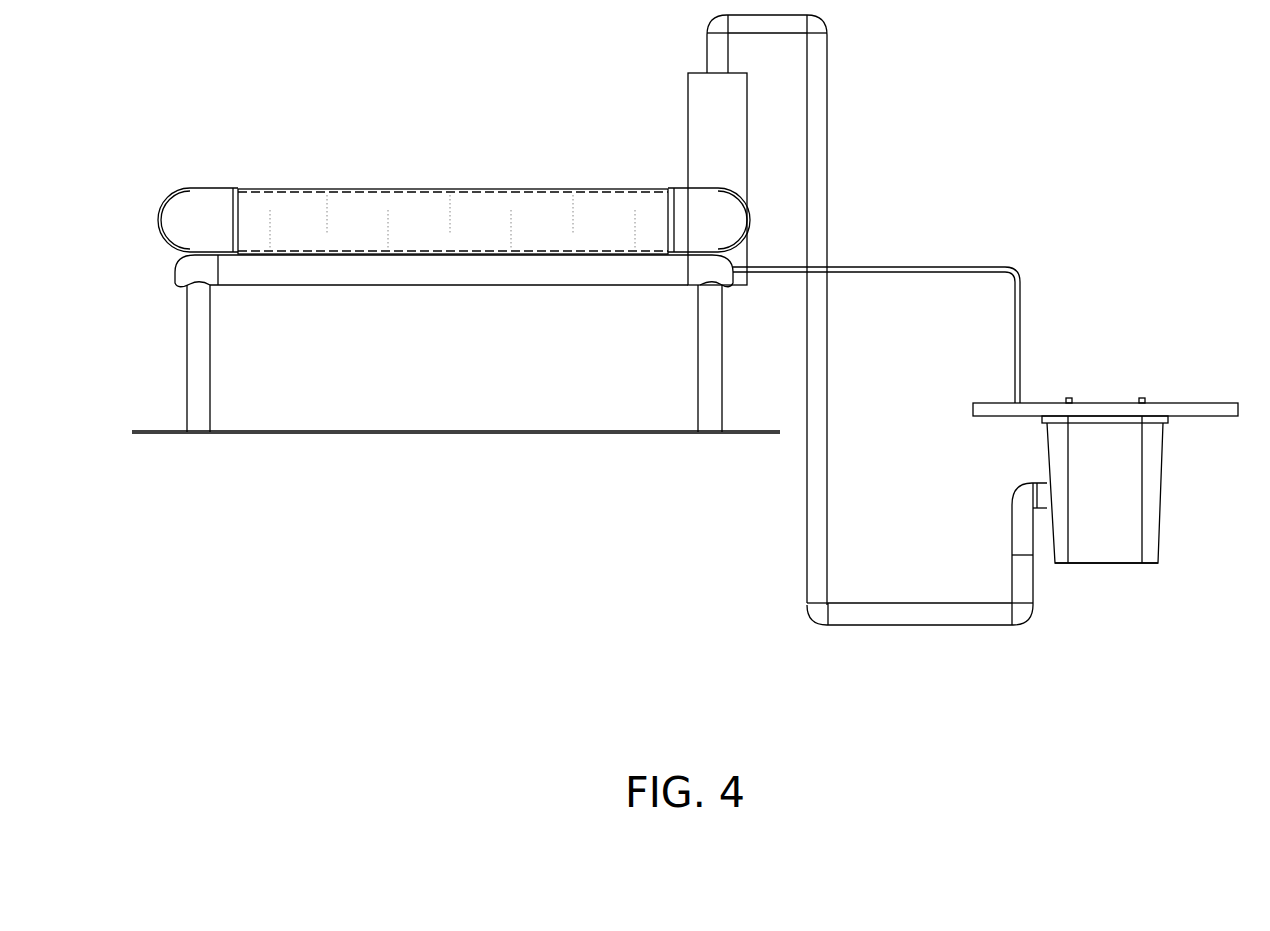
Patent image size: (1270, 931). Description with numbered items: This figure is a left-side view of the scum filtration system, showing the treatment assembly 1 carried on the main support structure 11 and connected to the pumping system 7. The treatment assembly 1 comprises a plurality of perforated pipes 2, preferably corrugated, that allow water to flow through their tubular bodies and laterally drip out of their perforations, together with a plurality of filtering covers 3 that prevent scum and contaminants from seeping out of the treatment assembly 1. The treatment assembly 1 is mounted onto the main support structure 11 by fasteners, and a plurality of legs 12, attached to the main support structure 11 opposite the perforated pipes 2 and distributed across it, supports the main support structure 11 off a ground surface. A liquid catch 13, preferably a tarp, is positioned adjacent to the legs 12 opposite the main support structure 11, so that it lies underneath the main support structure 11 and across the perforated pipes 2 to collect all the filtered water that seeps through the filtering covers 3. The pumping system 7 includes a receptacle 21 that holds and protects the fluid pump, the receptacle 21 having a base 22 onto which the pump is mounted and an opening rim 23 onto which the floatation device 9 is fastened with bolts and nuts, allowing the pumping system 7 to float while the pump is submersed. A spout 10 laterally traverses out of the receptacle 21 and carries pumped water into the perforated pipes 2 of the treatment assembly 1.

The treatment assembly 1 is at (290, 72).
The perforated pipes 2 is at (364, 198).
The filtering covers 3 is at (494, 193).
The pumping system 7 is at (1160, 315).
The floatation device 9 is at (975, 405).
The spout 10 is at (1014, 515).
The main support structure 11 is at (445, 278).
The legs 12 is at (192, 348).
The liquid catch 13 is at (343, 433).
The receptacle 21 is at (1155, 491).
The base 22 is at (1110, 571).
The opening rim 23 is at (1168, 420).